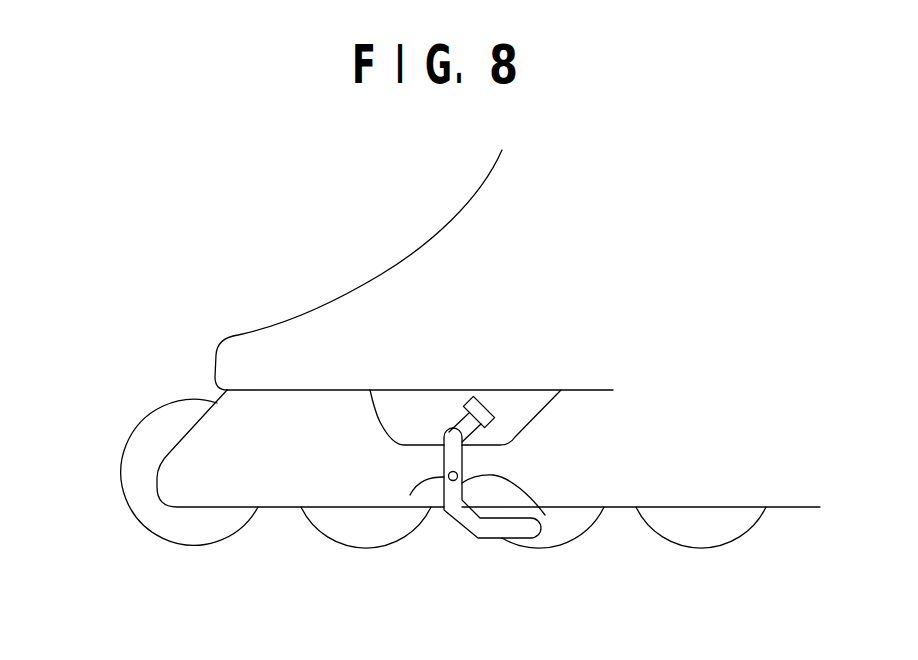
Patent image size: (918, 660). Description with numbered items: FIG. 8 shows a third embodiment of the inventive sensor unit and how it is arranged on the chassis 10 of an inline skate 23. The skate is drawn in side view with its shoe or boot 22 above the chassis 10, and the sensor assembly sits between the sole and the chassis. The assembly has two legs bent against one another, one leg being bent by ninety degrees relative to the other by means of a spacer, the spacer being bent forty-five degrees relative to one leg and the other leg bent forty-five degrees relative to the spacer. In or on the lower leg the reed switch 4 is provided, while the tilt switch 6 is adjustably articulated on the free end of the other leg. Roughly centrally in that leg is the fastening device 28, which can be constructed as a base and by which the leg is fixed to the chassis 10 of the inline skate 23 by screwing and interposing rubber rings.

The shoe or boot 22 is at (422, 280).
The inline skate 23 is at (648, 258).
The chassis 10 is at (595, 477).
The tilt switch 6 is at (488, 417).
The reed switch 4 is at (487, 533).
The fastening device 28 is at (410, 495).